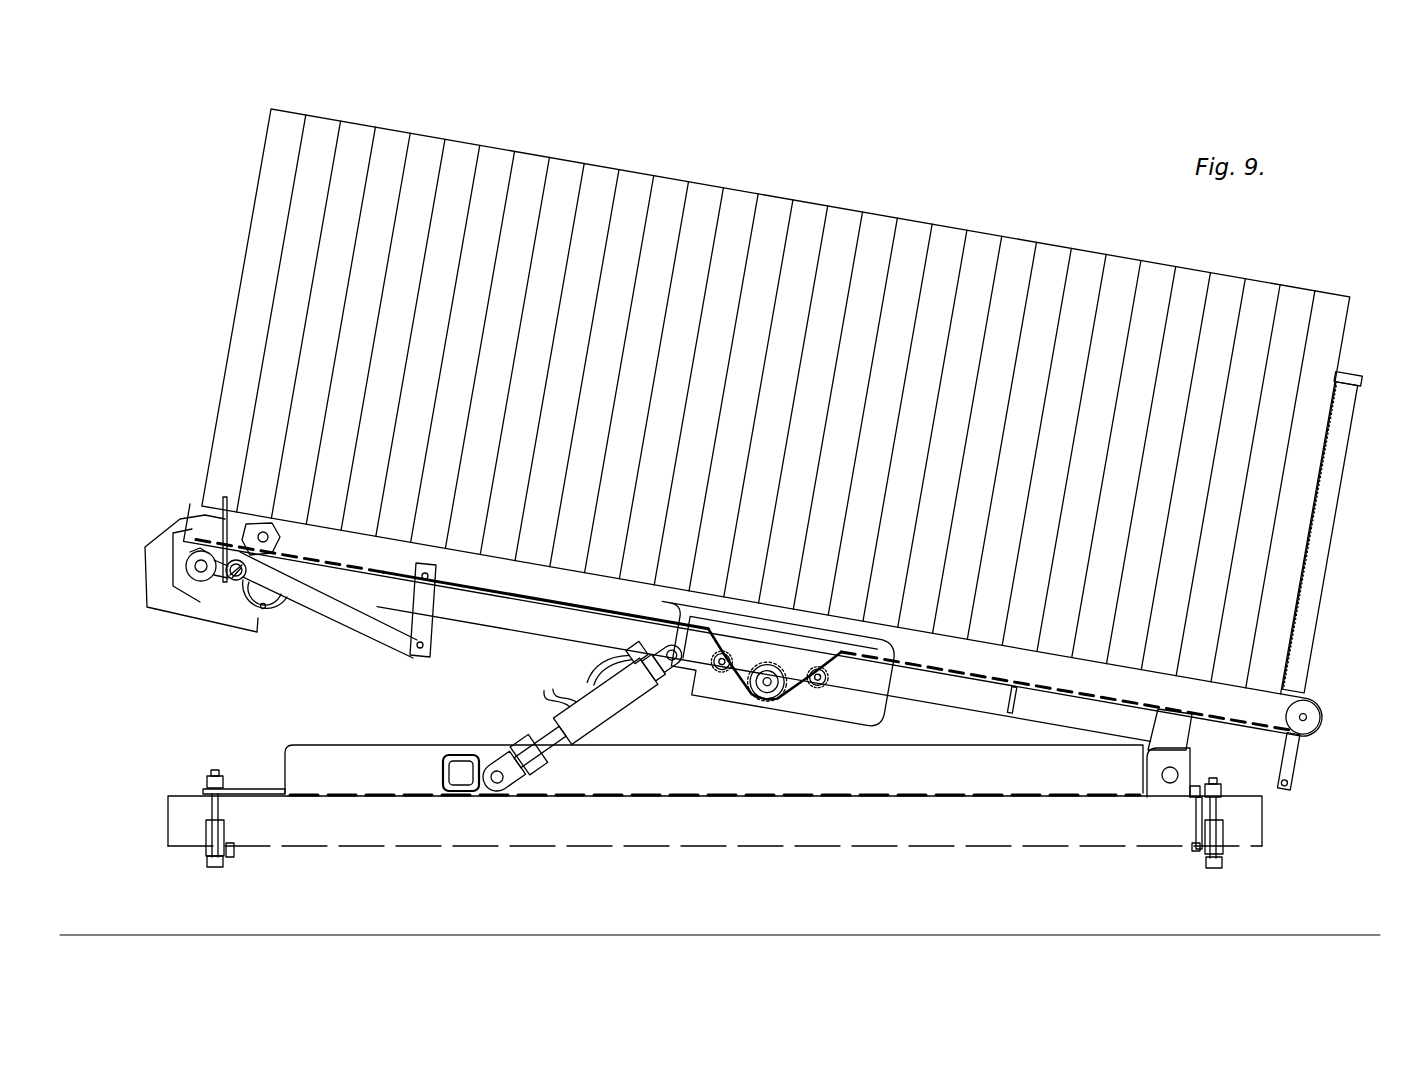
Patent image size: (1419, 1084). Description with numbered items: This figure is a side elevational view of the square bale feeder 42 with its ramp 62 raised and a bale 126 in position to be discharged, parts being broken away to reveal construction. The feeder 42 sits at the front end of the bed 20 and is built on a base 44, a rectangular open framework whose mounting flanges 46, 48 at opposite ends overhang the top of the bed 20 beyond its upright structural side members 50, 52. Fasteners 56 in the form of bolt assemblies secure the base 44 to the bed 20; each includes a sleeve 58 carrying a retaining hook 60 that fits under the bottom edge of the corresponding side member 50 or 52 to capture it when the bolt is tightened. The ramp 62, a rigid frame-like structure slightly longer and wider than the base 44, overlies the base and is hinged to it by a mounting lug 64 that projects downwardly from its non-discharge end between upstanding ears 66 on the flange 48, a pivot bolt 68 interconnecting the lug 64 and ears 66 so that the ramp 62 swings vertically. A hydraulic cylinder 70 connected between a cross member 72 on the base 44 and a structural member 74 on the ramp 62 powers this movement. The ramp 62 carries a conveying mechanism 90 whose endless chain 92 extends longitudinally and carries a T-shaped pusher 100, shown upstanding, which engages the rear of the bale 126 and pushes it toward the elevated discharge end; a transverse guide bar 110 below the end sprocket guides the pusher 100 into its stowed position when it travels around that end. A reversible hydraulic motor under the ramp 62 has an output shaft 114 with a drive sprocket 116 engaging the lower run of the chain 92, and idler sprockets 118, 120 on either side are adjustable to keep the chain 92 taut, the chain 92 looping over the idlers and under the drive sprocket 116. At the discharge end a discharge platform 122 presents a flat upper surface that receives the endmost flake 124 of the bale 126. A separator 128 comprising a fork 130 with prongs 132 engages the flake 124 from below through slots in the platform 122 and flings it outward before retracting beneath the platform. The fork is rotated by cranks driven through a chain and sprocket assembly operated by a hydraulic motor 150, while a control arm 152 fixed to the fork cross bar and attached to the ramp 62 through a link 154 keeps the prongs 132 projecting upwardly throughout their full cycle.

The bed 20 is at (178, 807).
The square bale feeder 42 is at (168, 388).
The base 44 is at (272, 748).
The mounting flange 46 is at (238, 788).
The mounting flange 48 is at (1197, 787).
The upright structural side member 50 is at (222, 812).
The upright structural side member 52 is at (1207, 827).
The fastener 56 is at (195, 850).
The sleeve 58 is at (226, 862).
The retaining hook 60 is at (234, 850).
The ramp 62 is at (185, 580).
The mounting lug 64 is at (1180, 730).
The upstanding ear 66 is at (1137, 790).
The pivot bolt 68 is at (1166, 780).
The hydraulic cylinder 70 is at (589, 726).
The cross member 72 is at (462, 757).
The structural member 74 is at (672, 688).
The conveying mechanism 90 is at (1322, 710).
The endless chain 92 is at (887, 690).
The pusher 100 is at (1318, 562).
The guide bar 110 is at (1292, 787).
The output shaft 114 is at (767, 692).
The drive sprocket 116 is at (777, 637).
The idler sprocket 118 is at (720, 672).
The idler sprocket 120 is at (818, 688).
The discharge platform 122 is at (152, 545).
The flake 124 is at (265, 233).
The bale 126 is at (790, 178).
The separator 128 is at (222, 592).
The fork 130 is at (190, 585).
The prong 132 is at (222, 510).
The hydraulic motor 150 is at (282, 605).
The control arm 152 is at (348, 610).
The link 154 is at (440, 618).